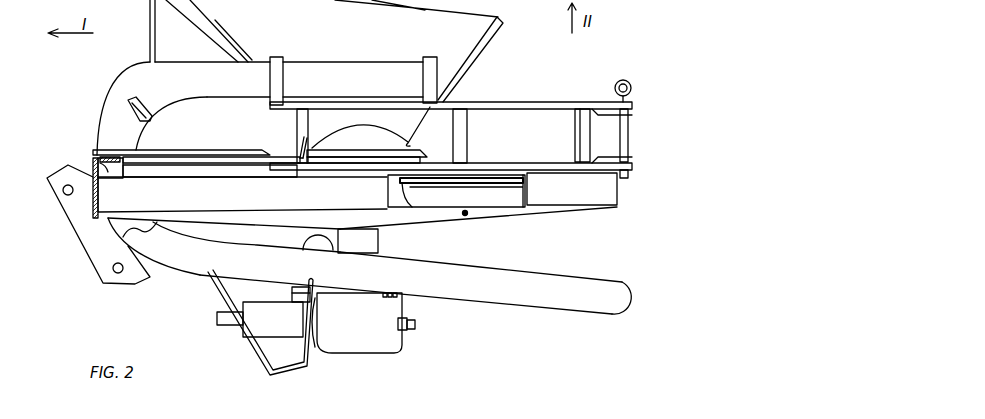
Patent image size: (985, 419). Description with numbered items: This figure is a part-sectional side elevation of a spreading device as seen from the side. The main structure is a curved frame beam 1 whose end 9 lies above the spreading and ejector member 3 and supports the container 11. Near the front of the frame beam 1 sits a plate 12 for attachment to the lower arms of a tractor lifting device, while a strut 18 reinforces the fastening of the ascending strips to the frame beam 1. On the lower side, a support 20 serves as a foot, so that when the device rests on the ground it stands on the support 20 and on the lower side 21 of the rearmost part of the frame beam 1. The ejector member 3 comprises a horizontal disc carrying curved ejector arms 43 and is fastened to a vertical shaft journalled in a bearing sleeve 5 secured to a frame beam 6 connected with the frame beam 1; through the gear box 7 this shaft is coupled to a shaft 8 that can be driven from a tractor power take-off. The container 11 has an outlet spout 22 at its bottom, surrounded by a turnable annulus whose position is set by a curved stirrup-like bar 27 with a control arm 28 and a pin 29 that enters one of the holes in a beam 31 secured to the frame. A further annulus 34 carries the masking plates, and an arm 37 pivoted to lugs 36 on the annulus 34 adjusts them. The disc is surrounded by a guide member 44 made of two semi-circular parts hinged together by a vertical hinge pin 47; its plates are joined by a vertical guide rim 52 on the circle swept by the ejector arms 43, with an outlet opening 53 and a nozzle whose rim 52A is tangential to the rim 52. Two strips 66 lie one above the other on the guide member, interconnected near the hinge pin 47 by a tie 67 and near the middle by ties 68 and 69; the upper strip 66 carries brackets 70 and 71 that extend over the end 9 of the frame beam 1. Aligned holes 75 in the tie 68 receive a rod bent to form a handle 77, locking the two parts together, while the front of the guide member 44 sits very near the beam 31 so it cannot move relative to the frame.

The frame beam 1 is at (563, 278).
The spreading and ejector member 3 is at (464, 214).
The bearing sleeve 5 is at (380, 244).
The frame beam 6 is at (297, 246).
The gear box 7 is at (395, 346).
The shaft 8 is at (217, 317).
The end of frame beam 9 is at (360, 62).
The container 11 is at (489, 33).
The plate 12 is at (88, 250).
The strut 18 is at (150, 20).
The support 20 is at (262, 362).
The lower side of rearmost part of beam 21 is at (622, 316).
The outlet spout 22 is at (410, 135).
The curved stirrup-like bar 27 is at (226, 166).
The control arm 28 is at (100, 157).
The pin 29 is at (108, 172).
The beam 31 is at (93, 158).
The annulus 34 is at (420, 156).
The lugs 36 is at (276, 157).
The arm 37 is at (205, 150).
The ejector arms 43 is at (505, 196).
The guide member 44 is at (598, 209).
The vertical hinge pin 47 is at (628, 137).
The guide rim 52 is at (287, 208).
The rim of nozzle 52A is at (617, 200).
The opening 53 is at (388, 190).
The strips 66 is at (558, 102).
The tie 67 is at (575, 140).
The tie 68 is at (297, 126).
The tie 69 is at (467, 133).
The bracket 70 is at (278, 57).
The bracket 71 is at (430, 57).
The holes 75 is at (305, 140).
The handle 77 is at (308, 153).